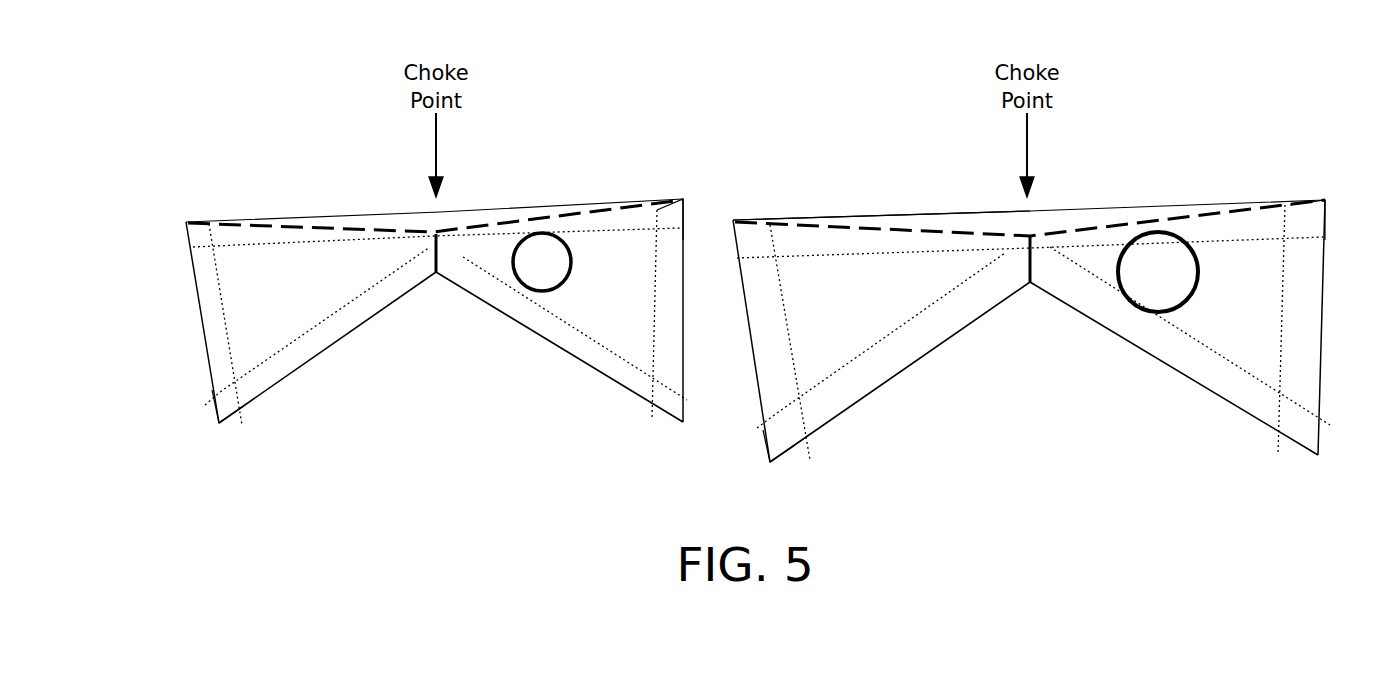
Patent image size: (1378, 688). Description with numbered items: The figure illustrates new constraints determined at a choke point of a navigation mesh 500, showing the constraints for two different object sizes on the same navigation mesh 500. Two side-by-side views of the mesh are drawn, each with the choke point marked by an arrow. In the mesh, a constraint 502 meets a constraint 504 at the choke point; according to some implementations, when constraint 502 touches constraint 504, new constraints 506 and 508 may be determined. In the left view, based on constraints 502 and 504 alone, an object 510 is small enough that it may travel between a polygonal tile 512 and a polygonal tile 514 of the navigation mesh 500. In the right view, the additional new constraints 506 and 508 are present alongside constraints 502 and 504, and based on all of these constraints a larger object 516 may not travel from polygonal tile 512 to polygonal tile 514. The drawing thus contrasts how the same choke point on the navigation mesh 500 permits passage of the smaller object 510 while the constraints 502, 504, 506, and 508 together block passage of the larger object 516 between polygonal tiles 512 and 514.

The navigation mesh 500 is at (605, 62).
The constraint 502 is at (463, 267).
The constraint 504 is at (577, 232).
The new constraint 506 is at (1008, 257).
The new constraint 508 is at (958, 250).
The object 510 is at (542, 262).
The polygonal tile 512 is at (670, 218).
The polygonal tile 514 is at (228, 402).
The object 516 is at (1158, 272).